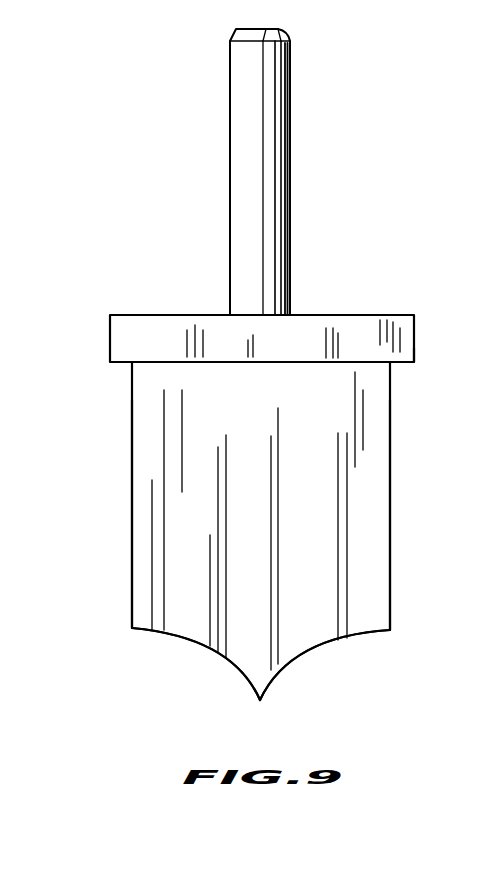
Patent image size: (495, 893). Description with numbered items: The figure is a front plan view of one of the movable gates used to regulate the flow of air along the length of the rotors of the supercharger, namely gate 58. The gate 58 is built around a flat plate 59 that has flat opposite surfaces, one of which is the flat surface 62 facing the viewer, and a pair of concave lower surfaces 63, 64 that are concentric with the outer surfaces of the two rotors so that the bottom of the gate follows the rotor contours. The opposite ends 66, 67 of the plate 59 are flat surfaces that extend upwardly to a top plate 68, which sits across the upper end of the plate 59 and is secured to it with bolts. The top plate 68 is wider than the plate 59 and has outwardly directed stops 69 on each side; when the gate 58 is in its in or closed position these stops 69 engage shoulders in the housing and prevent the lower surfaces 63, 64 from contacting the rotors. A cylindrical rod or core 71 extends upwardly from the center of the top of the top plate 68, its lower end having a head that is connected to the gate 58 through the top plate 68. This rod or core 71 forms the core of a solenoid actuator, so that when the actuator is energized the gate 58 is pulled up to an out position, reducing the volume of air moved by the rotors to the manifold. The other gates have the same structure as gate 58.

The gate 58 is at (382, 212).
The flat plate 59 is at (172, 315).
The flat surface 62 is at (372, 430).
The concave lower surface 63 is at (198, 638).
The concave lower surface 64 is at (325, 638).
The end of plate 66 is at (132, 520).
The end of plate 67 is at (391, 517).
The top plate 68 is at (127, 335).
The stop 69 is at (403, 365).
The rod or core 71 is at (243, 128).